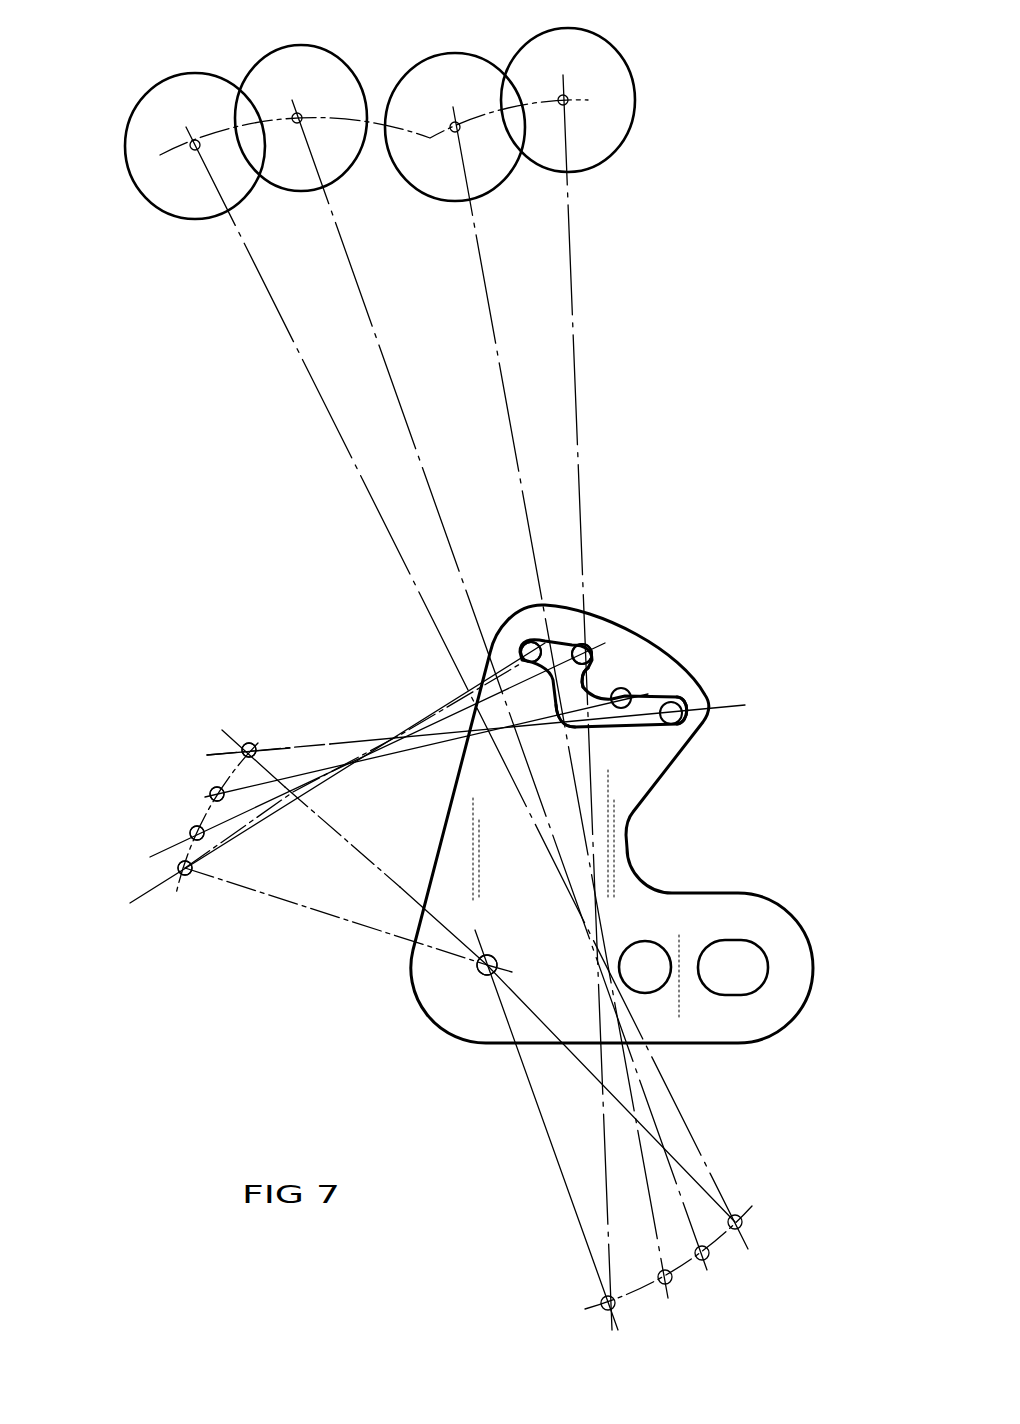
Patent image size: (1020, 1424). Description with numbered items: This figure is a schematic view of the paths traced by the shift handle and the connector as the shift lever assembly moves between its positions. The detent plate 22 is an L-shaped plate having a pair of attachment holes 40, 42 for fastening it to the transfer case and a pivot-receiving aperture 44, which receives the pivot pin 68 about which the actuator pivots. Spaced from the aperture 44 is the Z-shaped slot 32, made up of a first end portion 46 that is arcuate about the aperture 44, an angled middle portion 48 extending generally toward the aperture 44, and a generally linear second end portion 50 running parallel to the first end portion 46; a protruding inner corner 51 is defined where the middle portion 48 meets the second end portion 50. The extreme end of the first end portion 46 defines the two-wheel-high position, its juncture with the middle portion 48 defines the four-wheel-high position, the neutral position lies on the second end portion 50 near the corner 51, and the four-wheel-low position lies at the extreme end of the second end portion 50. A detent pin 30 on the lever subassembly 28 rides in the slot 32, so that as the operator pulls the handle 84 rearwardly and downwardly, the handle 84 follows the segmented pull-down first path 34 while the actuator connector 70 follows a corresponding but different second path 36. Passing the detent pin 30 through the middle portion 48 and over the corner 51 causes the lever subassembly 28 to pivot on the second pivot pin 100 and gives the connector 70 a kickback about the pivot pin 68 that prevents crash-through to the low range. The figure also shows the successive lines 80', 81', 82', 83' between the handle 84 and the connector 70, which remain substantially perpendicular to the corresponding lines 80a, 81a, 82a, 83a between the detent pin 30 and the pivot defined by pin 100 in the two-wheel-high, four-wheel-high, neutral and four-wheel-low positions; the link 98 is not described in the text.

The detent plate 22 is at (795, 902).
The lever subassembly 28 is at (467, 702).
The detent pin 30 is at (524, 645).
The Z-shaped slot 32 is at (607, 733).
The first optimal path 34 is at (373, 112).
The second path 36 is at (685, 1272).
The attachment hole 40 is at (648, 940).
The attachment hole 42 is at (726, 940).
The pivot-receiving aperture 44 is at (492, 955).
The first end portion 46 is at (566, 640).
The middle portion 48 is at (567, 694).
The second end portion 50 is at (634, 727).
The protruding inner corner 51 is at (592, 683).
The pivot pin 68 is at (480, 975).
The actuator connector 70 is at (742, 1226).
The line between handle and connector 80' is at (467, 688).
The line between handle and connector 81' is at (499, 685).
The line between handle and connector 82' is at (560, 702).
The line between handle and connector 83' is at (600, 702).
The line between detent pin and pivot 80a is at (175, 878).
The line between detent pin and pivot 81a is at (158, 852).
The line between detent pin and pivot 82a is at (210, 797).
The line between detent pin and pivot 83a is at (222, 752).
The handle 84 is at (190, 73).
The link 98 is at (185, 868).
The second pivot pin 100 is at (196, 866).